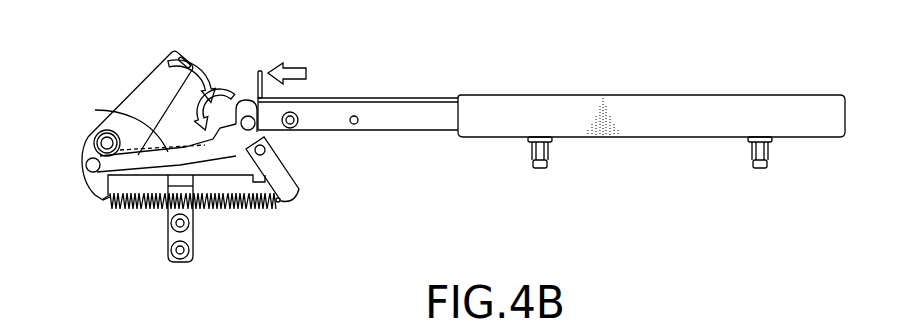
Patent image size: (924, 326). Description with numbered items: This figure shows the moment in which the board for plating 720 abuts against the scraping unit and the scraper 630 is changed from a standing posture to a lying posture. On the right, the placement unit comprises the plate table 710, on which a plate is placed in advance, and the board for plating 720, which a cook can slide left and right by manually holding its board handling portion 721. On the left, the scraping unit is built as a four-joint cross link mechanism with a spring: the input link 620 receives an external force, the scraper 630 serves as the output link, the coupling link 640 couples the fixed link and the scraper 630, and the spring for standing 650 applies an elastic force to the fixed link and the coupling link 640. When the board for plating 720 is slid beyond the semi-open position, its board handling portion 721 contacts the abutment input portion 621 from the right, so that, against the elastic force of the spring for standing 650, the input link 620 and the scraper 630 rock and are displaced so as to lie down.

The scraper 630 is at (162, 75).
The coupling link 640 is at (99, 114).
The input link 620 is at (292, 186).
The abutment input portion 621 is at (247, 99).
The spring for standing 650 is at (225, 216).
The board for plating 720 is at (396, 110).
The board handling portion 721 is at (262, 72).
The plate table 710 is at (668, 100).